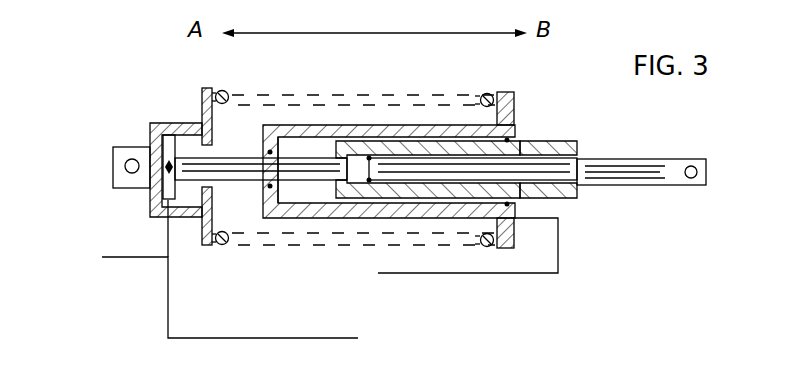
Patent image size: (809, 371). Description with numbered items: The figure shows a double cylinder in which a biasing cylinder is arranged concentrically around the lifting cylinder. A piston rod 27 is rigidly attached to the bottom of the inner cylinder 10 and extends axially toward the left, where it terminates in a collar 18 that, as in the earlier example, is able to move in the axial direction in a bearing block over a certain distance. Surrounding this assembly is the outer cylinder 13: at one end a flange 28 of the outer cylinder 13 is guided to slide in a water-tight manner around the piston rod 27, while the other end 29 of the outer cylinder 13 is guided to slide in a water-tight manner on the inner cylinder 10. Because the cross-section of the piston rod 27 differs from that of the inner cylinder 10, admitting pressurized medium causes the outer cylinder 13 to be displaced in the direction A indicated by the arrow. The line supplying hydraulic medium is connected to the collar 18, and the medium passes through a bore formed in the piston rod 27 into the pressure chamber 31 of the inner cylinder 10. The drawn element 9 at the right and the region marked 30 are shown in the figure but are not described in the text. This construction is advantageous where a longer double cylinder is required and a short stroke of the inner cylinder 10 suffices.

The rod 9 is at (620, 165).
The inner cylinder 10 is at (553, 145).
The outer cylinder 13 is at (373, 141).
The collar 18 is at (170, 134).
The piston rod 27 is at (227, 160).
The flange 28 is at (271, 150).
The other end of the outer cylinder 29 is at (519, 130).
The cylinder 30 is at (305, 146).
The pressure chamber 31 is at (362, 160).